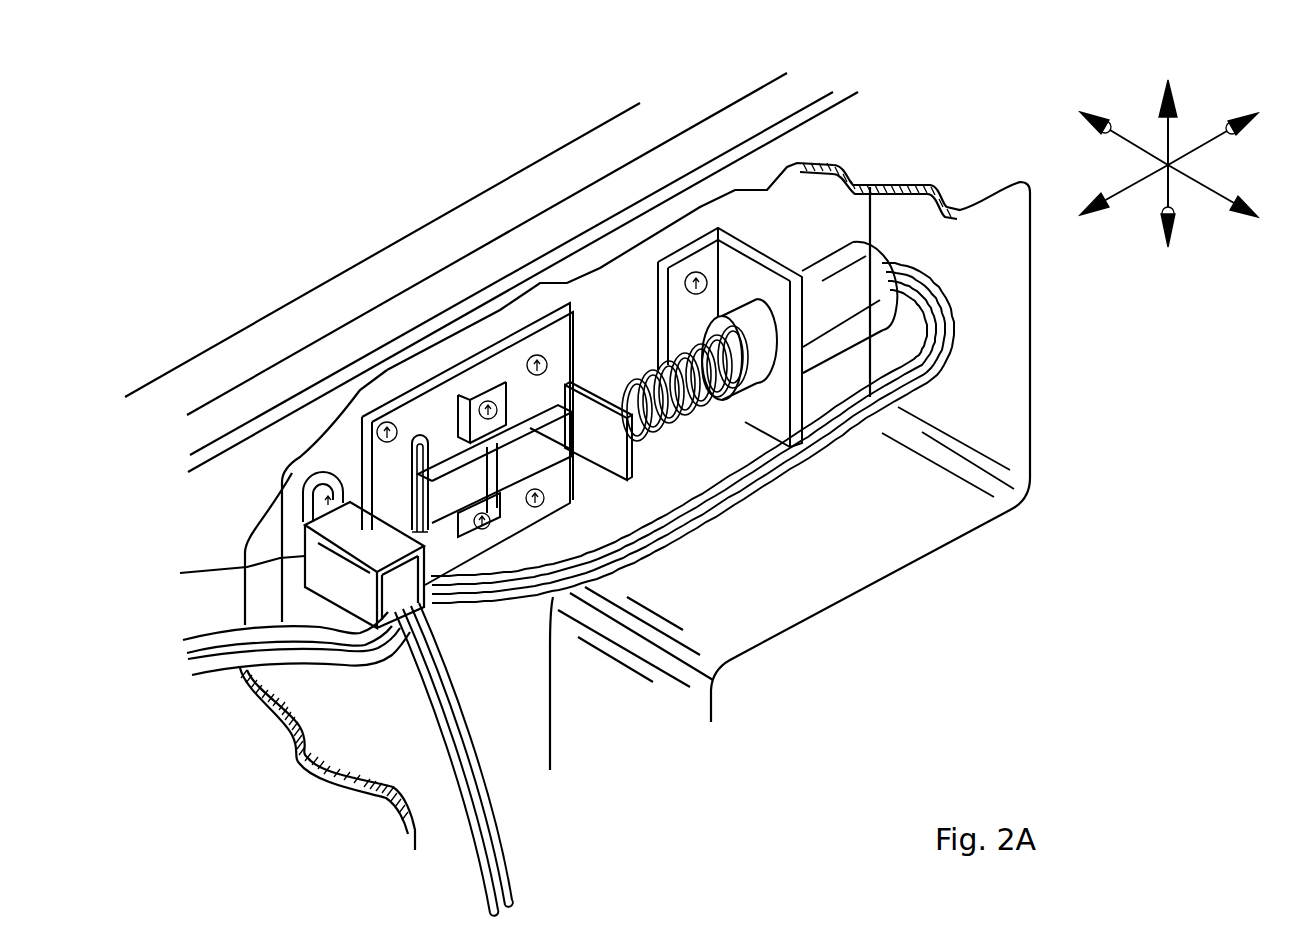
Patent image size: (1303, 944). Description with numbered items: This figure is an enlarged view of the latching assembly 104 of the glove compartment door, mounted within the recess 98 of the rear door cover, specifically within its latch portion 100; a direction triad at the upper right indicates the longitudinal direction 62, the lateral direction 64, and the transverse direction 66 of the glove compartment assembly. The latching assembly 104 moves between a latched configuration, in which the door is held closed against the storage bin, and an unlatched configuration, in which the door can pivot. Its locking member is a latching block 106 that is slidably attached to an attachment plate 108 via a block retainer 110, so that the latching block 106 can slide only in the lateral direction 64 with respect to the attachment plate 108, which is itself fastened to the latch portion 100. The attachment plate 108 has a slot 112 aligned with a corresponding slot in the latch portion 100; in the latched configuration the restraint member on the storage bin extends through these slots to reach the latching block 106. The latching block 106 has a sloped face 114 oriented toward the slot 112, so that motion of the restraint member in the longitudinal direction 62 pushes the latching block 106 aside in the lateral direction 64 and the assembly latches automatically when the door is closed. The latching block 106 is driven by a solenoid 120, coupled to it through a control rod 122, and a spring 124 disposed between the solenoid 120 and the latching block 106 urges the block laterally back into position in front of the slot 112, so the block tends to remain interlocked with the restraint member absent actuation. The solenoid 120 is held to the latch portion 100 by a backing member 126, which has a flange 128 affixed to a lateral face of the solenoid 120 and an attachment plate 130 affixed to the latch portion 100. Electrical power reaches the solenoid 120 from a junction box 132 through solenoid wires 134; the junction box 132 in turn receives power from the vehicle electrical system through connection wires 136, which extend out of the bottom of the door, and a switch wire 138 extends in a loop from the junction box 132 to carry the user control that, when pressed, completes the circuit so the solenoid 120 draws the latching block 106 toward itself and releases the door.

The longitudinal direction 62 is at (1210, 185).
The lateral direction 64 is at (1213, 135).
The transverse direction 66 is at (1165, 127).
The recess 98 is at (373, 688).
The latch portion 100 is at (783, 213).
The latching assembly 104 is at (590, 332).
The latching block 106 is at (535, 405).
The attachment plate 108 is at (455, 548).
The block retainer 110 is at (505, 495).
The slot 112 is at (412, 480).
The sloped face 114 is at (405, 480).
The solenoid 120 is at (848, 308).
The control rod 122 is at (716, 406).
The spring 124 is at (713, 403).
The backing member 126 is at (705, 222).
The flange 128 is at (885, 437).
The attachment plate 130 is at (678, 303).
The junction box 132 is at (330, 573).
The solenoid wires 134 is at (687, 542).
The connection wires 136 is at (460, 775).
The switch wire 138 is at (220, 665).